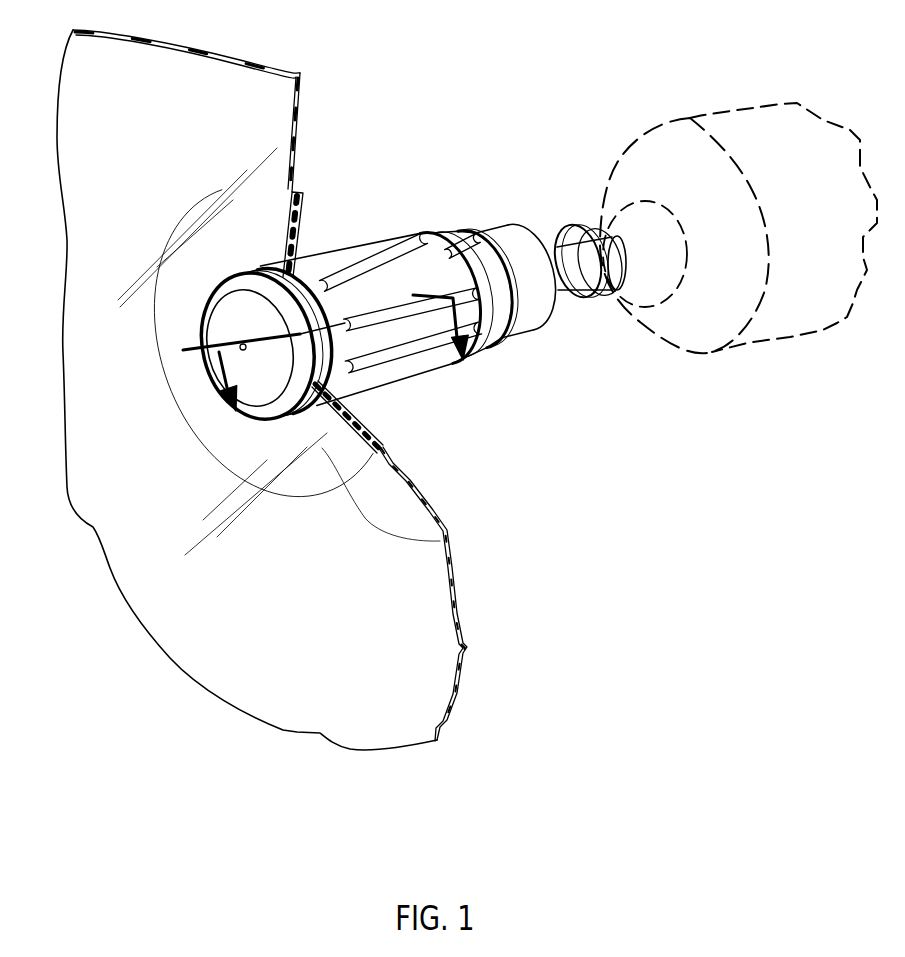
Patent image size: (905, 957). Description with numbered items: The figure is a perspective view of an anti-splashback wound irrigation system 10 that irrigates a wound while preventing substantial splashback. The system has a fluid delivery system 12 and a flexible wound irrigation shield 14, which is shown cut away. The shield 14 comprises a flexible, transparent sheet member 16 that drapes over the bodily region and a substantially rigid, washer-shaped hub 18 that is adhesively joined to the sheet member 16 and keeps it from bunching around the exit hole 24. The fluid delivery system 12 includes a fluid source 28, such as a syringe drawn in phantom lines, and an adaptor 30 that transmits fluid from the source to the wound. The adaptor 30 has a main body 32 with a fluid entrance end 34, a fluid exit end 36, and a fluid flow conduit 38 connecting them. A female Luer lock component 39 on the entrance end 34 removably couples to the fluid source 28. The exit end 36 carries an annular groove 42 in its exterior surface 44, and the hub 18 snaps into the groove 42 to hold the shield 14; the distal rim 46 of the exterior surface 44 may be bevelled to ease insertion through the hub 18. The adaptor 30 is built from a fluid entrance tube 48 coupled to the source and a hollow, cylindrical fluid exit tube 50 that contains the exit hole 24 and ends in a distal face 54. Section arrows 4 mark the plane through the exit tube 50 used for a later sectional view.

The section line 4- 4 is at (325, 353).
The anti-splashback wound irrigation system 10 is at (648, 477).
The fluid delivery system 12 is at (853, 68).
The flexible wound irrigation shield 14 is at (392, 435).
The flexible sheet member 16 is at (347, 660).
The substantially rigid hub 18 is at (438, 542).
The exit hole 24 is at (248, 346).
The fluid source 28 is at (770, 358).
The adaptor 30 is at (648, 277).
The main body 32 is at (455, 220).
The fluid entrance end 34 is at (578, 208).
The fluid exit end 36 is at (266, 368).
The fluid flow conduit 38 is at (650, 247).
The female Luer lock component 39 is at (590, 283).
The groove 42 is at (328, 346).
The exterior surface 44 is at (453, 360).
The distal rim 46 is at (283, 408).
The fluid entrance tube 48 is at (513, 243).
The fluid exit tube 50 is at (383, 265).
The distal face 54 is at (204, 367).